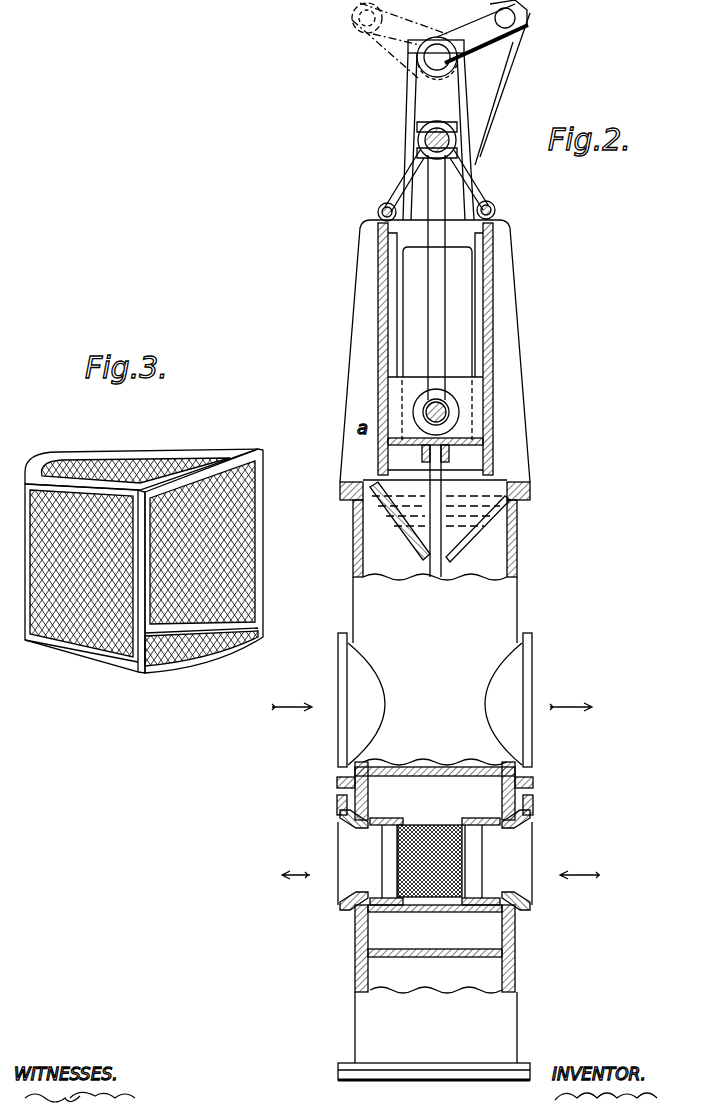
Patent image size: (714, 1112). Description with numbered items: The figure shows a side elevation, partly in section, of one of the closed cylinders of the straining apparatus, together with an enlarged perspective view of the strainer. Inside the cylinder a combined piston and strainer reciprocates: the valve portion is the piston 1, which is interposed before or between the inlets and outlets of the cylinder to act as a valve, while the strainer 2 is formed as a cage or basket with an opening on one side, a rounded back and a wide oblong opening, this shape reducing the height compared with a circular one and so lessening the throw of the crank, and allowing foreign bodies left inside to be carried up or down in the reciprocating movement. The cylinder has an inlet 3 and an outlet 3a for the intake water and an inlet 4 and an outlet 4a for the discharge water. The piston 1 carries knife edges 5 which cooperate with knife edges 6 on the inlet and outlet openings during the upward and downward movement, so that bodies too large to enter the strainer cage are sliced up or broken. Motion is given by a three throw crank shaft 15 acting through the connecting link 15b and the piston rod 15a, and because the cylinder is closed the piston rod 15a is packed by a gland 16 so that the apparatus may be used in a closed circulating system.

In FIG. 2, the piston 1 is at (435, 877).
In FIG. 2, the strainer 2 is at (428, 887).
In FIG. 3, the strainer 2 is at (259, 530).
In FIG. 2, the inlet 3 is at (527, 819).
In FIG. 2, the outlet 3a is at (350, 847).
In FIG. 2, the inlet 4 is at (347, 660).
In FIG. 2, the outlet 4a is at (527, 660).
In FIG. 2, the knife edges 5 is at (370, 825).
In FIG. 2, the knife edges 6 is at (362, 830).
In FIG. 2, the three throw crank shaft 15 is at (432, 62).
In FIG. 2, the piston rod 15a is at (441, 571).
In FIG. 2, the connecting link 15b is at (437, 297).
In FIG. 2, the gland 16 is at (385, 488).